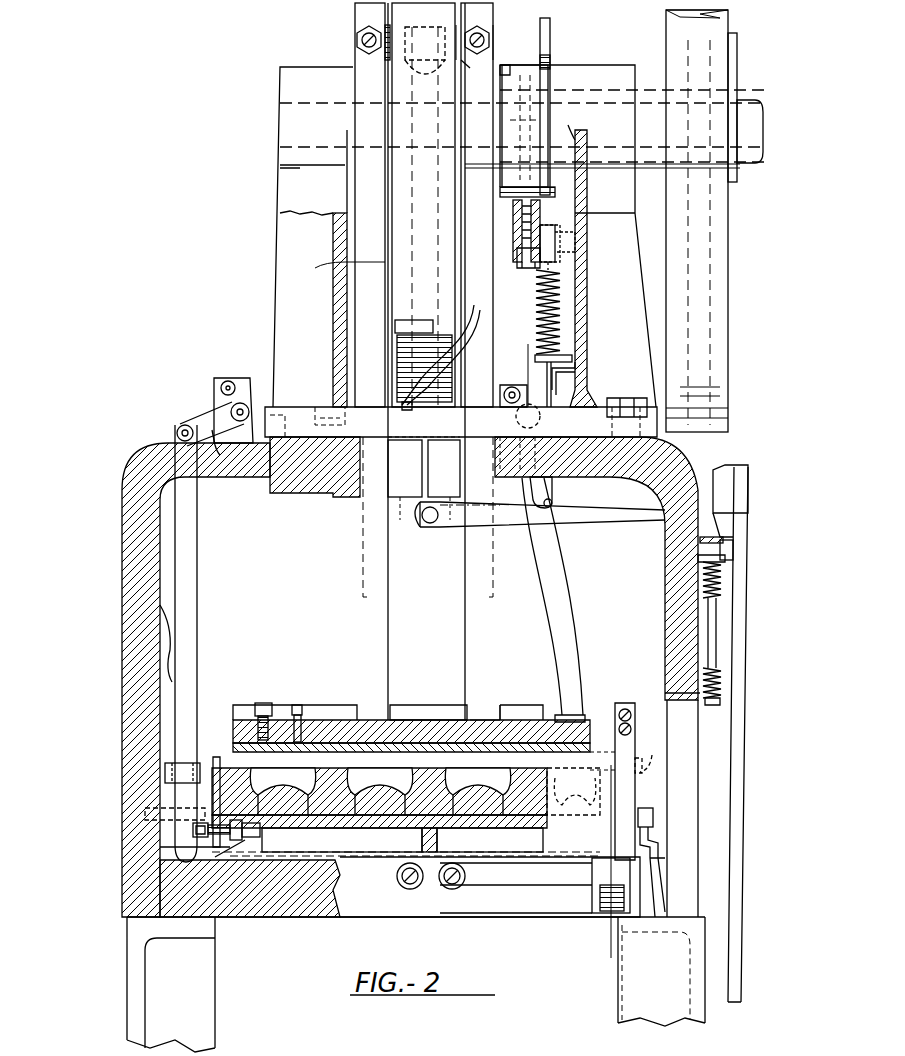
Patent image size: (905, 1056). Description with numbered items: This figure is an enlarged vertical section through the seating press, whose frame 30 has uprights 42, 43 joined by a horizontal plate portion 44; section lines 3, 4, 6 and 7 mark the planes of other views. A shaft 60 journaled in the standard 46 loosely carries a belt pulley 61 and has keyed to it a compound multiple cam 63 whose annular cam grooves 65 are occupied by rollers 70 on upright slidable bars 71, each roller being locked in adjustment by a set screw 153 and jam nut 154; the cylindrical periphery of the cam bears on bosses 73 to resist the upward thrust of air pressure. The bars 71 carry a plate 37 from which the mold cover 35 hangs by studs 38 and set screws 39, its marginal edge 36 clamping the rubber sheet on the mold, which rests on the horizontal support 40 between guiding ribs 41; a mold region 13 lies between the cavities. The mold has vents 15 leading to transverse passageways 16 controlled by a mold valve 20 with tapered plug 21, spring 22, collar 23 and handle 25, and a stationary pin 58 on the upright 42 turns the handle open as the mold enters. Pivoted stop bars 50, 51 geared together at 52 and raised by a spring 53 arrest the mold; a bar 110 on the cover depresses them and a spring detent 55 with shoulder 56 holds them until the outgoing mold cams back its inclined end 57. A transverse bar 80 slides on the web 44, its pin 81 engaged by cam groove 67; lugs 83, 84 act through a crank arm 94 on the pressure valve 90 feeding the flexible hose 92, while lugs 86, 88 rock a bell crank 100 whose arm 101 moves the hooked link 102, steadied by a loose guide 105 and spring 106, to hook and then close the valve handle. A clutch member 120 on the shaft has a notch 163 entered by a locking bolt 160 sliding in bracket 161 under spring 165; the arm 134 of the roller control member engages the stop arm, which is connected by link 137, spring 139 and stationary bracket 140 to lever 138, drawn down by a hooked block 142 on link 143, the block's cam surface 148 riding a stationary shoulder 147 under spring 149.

The section line 3— 3 is at (749, 413).
The section line 4— 4 is at (566, 567).
The section line 6— 6 is at (514, 277).
The section line 7— 7 is at (618, 944).
The mold ring 13 is at (379, 791).
The vents 15 is at (368, 828).
The transverse passageways 16 is at (316, 828).
The mold valve 20 is at (255, 840).
The tapered plug 21 is at (242, 840).
The spring 22 is at (235, 835).
The collar 23 is at (213, 800).
The handle 25 is at (195, 830).
The press frame 30 is at (158, 695).
The mold cover 35 is at (403, 725).
The marginal edge 36 is at (272, 756).
The plate 37 is at (500, 722).
The studs 38 is at (298, 705).
The set screws 39 is at (263, 703).
The horizontal support 40 is at (380, 875).
The guiding ribs 41 is at (318, 768).
The upright 42 is at (158, 572).
The upright 43 is at (690, 632).
The horizontal plate portion 44 is at (312, 478).
The standard 46 is at (588, 300).
The stop bar 50 is at (540, 885).
The stop bar 51 is at (405, 889).
The gearing 52 is at (452, 889).
The spring 53 is at (603, 915).
The spring detent 55 is at (656, 840).
The shoulder 56 is at (665, 862).
The inclined end 57 is at (655, 815).
The stationary pin 58 is at (170, 808).
The shaft 60 is at (300, 110).
The belt pulley 61 is at (728, 352).
The compound multiple cam 63 is at (362, 205).
The annular cam grooves 65 is at (425, 75).
The cam groove 67 is at (458, 332).
The rollers 70 is at (423, 205).
The upright slidable bars 71 is at (426, 361).
The bosses 73 is at (463, 405).
The transverse bar 80 is at (308, 395).
The pin 81 is at (400, 398).
The lug 83 is at (503, 380).
The lug 84 is at (515, 388).
The lug 86 is at (250, 398).
The lug 88 is at (215, 388).
The pressure valve 90 is at (537, 437).
The flexible hose 92 is at (570, 628).
The crank arm 94 is at (520, 360).
The bell crank 100 is at (192, 422).
The arm 101 is at (218, 452).
The hooked link 102 is at (180, 868).
The loose guide 105 is at (170, 765).
The spring 106 is at (170, 650).
The bar 110 is at (635, 787).
The clutch member 120 is at (475, 76).
The arm 134 is at (552, 22).
The link 137 is at (580, 372).
The lever 138 is at (612, 520).
The spring 139 is at (536, 318).
The stationary bracket 140 is at (575, 352).
The hooked block 142 is at (735, 505).
The link 143 is at (745, 745).
The stationary shoulder 147 is at (733, 548).
The cam surface 148 is at (725, 540).
The spring 149 is at (722, 585).
The set screw 153 is at (490, 33).
The jam nut 154 is at (360, 30).
The locking bolt 160 is at (545, 215).
The bracket 161 is at (515, 232).
The notch 163 is at (552, 58).
The spring 165 is at (518, 254).